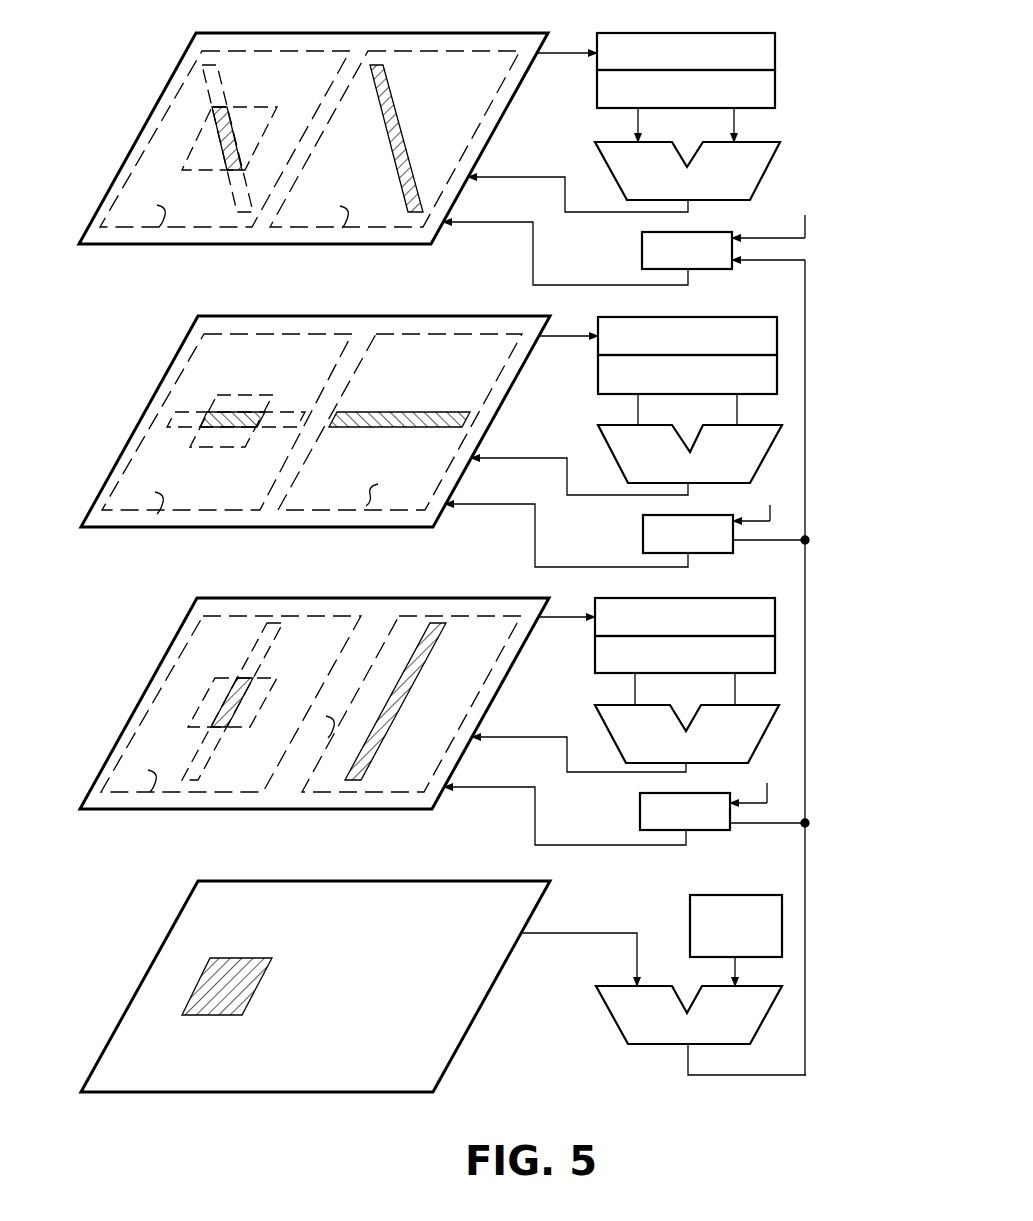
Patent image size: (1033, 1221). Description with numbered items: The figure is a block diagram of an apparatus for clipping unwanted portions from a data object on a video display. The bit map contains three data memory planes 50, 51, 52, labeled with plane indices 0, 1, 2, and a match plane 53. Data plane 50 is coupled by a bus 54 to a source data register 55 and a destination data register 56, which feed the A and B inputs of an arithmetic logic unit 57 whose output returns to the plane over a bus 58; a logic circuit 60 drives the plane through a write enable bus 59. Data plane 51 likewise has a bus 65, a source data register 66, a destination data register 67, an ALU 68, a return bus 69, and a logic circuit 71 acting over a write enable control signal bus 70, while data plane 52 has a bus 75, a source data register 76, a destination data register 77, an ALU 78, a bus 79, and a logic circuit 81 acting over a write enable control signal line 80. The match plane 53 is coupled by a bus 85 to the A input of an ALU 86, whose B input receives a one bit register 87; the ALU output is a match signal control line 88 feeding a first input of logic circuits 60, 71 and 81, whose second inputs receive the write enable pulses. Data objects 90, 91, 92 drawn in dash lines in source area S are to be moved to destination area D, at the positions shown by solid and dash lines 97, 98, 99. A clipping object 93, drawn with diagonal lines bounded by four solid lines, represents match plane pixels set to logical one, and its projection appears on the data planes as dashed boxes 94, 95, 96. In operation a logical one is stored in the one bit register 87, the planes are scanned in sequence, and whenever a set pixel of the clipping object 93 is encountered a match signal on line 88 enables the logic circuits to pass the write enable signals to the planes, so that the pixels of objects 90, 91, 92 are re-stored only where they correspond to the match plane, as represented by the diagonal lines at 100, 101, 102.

The plane 0 index 0 is at (96, 246).
The plane 1 index 1 is at (98, 529).
The plane 2 index 2 is at (100, 811).
The data memory plane 50 is at (186, 246).
The data memory plane 51 is at (170, 529).
The data memory plane 52 is at (202, 811).
The match plane 53 is at (170, 1094).
The bus 54 is at (568, 50).
The source data register 55 is at (775, 55).
The destination data register 56 is at (775, 100).
The arithmetic logic unit 57 is at (768, 180).
The bus 58 is at (536, 170).
The write enable bus 59 is at (542, 264).
The logic circuit 60 is at (716, 237).
The bus 65 is at (561, 340).
The source data register 66 is at (732, 319).
The destination data register 67 is at (598, 382).
The ALU 68 is at (618, 456).
The bus 69 is at (530, 467).
The write enable control signal bus 70 is at (540, 546).
The logic circuit 71 is at (690, 519).
The bus 75 is at (554, 620).
The source data register 76 is at (730, 602).
The destination data register 77 is at (598, 658).
The ALU 78 is at (612, 734).
The bus 79 is at (536, 744).
The write enable control signal line 80 is at (546, 830).
The logic circuit 81 is at (686, 799).
The bus 85 is at (598, 934).
The ALU 86 is at (610, 1020).
The one bit register 87 is at (736, 878).
The match signal control line 88 is at (804, 886).
The data object 90 is at (392, 98).
The data object 91 is at (392, 410).
The data object 92 is at (426, 694).
The clipping object 93 is at (258, 976).
The dashed box 94 is at (262, 137).
The dashed box 95 is at (238, 396).
The dashed box 96 is at (264, 704).
The destination position lines 97 is at (212, 88).
The destination position lines 98 is at (272, 430).
The destination position lines 99 is at (206, 747).
The restored pixels 100 is at (222, 133).
The restored pixels 101 is at (220, 422).
The restored pixels 102 is at (232, 698).